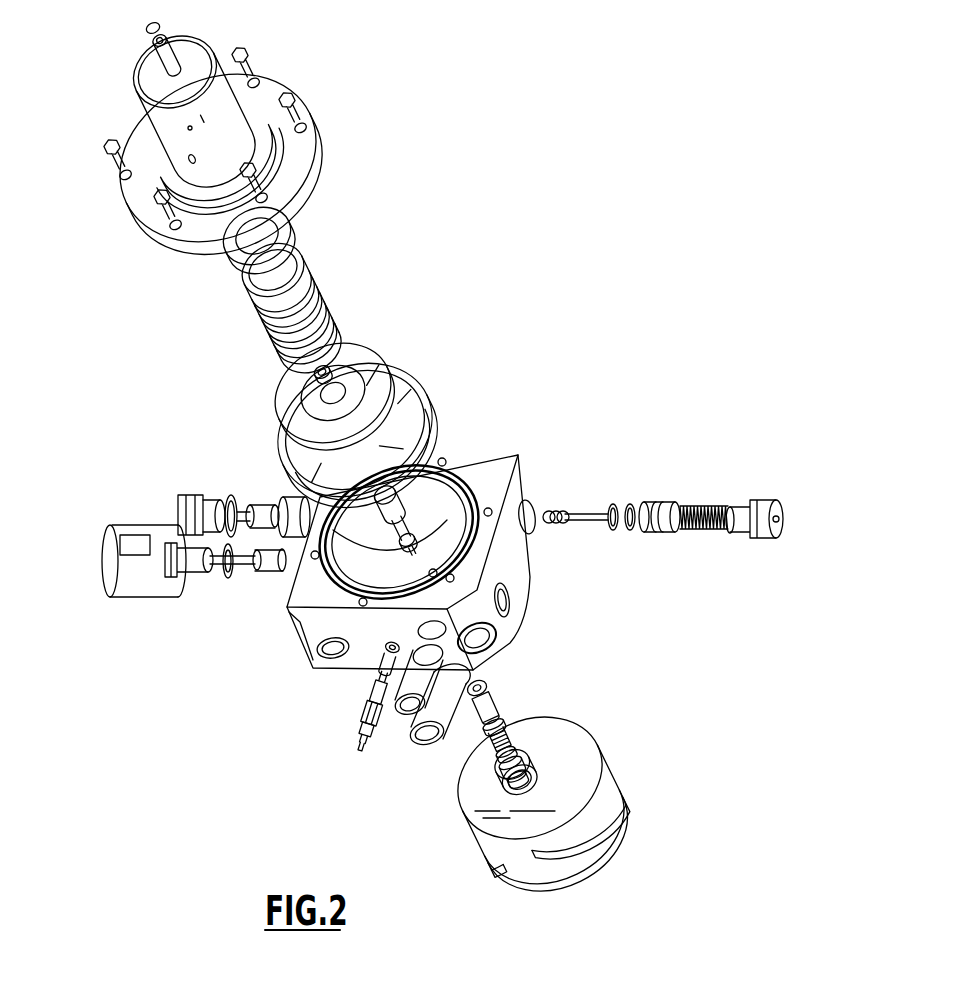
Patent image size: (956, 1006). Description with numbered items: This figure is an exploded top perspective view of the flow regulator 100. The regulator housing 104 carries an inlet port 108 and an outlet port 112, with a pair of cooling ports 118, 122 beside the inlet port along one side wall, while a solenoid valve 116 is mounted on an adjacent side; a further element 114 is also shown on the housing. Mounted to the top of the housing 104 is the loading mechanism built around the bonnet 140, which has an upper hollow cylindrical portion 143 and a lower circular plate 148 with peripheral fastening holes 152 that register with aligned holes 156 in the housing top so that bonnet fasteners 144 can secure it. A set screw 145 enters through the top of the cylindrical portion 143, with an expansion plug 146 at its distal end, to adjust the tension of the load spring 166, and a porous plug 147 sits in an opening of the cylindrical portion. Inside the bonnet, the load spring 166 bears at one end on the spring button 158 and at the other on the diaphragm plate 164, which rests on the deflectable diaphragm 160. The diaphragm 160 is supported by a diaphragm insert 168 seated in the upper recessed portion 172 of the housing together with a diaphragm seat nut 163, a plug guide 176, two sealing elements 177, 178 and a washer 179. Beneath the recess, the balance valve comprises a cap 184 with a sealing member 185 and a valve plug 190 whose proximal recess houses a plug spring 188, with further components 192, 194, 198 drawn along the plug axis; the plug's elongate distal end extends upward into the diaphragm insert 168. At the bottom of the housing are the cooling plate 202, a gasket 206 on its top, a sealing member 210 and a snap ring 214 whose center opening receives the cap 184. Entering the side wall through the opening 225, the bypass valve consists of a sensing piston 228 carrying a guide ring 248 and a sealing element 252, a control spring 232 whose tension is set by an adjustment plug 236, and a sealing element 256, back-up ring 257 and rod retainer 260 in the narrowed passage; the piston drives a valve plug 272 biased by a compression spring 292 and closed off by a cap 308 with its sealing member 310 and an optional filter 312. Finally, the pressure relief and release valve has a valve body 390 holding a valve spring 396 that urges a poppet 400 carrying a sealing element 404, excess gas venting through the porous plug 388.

The flow regulator 100 is at (578, 34).
The regulator housing 104 is at (530, 587).
The inlet port 108 is at (320, 647).
The outlet port 112 is at (500, 648).
The port 114 is at (510, 604).
The solenoid valve 116 is at (124, 578).
The cooling port 118 is at (398, 697).
The cooling port 122 is at (432, 747).
The bonnet 140 is at (213, 45).
The upper hollow cylindrical portion 143 is at (147, 112).
The bonnet fasteners 144 is at (292, 100).
The set screw 145 is at (160, 62).
The expansion plug 146 is at (147, 28).
The porous plug 147 is at (192, 161).
The lower circular plate 148 is at (310, 158).
The peripheral fastening holes 152 is at (120, 175).
The aligned holes 156 is at (527, 525).
The spring button 158 is at (280, 227).
The diaphragm 160 is at (430, 398).
The diaphragm seat nut 163 is at (332, 363).
The diaphragm plate 164 is at (380, 357).
The load spring 166 is at (297, 252).
The diaphragm insert 168 is at (395, 497).
The upper recessed portion 172 is at (300, 622).
The plug guide 176 is at (423, 477).
The sealing element 177 is at (440, 488).
The sealing element 178 is at (487, 515).
The washer 179 is at (408, 542).
The cap 184 is at (518, 780).
The sealing member 185 is at (512, 767).
The plug spring 188 is at (499, 739).
The valve plug 190 is at (502, 687).
The ring 192 is at (495, 727).
The spool body 194 is at (486, 709).
The seal ring 198 is at (507, 754).
The cooling plate 202 is at (620, 805).
The gasket 206 is at (473, 835).
The sealing member 210 is at (560, 841).
The snap ring 214 is at (566, 852).
The opening 225 is at (545, 512).
The sensing piston 228 is at (673, 502).
The control spring 232 is at (703, 510).
The adjustment plug 236 is at (767, 500).
The guide ring 248 is at (630, 507).
The sealing element 252 is at (615, 507).
The sealing element 256 is at (563, 513).
The back-up ring 257 is at (552, 513).
The rod retainer 260 is at (557, 513).
The valve plug 272 is at (237, 515).
The compression spring 292 is at (229, 513).
The cap 308 is at (178, 530).
The sealing member 310 is at (192, 498).
The filter 312 is at (272, 493).
The porous plug 388 is at (361, 746).
The valve body 390 is at (365, 733).
The valve spring 396 is at (372, 713).
The poppet 400 is at (377, 670).
The sealing element 404 is at (392, 647).